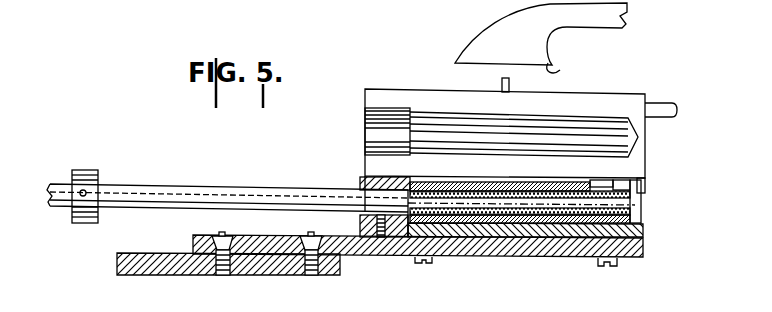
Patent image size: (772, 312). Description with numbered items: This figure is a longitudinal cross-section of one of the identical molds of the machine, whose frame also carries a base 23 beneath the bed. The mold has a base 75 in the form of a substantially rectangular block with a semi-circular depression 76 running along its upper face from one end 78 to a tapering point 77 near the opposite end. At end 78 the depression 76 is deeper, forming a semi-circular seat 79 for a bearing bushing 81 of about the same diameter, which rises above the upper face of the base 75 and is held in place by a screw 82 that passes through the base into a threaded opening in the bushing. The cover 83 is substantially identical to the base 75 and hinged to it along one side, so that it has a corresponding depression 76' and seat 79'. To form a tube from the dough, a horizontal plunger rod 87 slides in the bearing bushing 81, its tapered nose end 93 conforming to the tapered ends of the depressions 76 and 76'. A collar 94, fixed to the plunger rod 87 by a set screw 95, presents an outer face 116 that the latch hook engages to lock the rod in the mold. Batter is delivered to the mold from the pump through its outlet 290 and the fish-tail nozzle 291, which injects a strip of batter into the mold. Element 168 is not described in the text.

The base 23 is at (264, 10).
The cover 83 is at (622, 98).
The semi-circular seat 79' is at (360, 131).
The semi-circular depression 76' is at (523, 106).
The plunger rod 87 is at (195, 190).
The collar 94 is at (85, 171).
The outer face of collar 116 is at (72, 173).
The adjusting screw 168 is at (98, 173).
The set screw 95 is at (83, 197).
The end of block 78 is at (367, 238).
The bearing bushing 81 is at (362, 218).
The screw 82 is at (382, 230).
The nose end 93 is at (430, 185).
The semi-circular depression 76 is at (521, 241).
The semi-circular seat 79 is at (524, 257).
The tapering point 77 is at (636, 205).
The base 75 is at (540, 236).
The outlet 290 is at (618, 15).
The fish-tail nozzle 291 is at (579, 68).